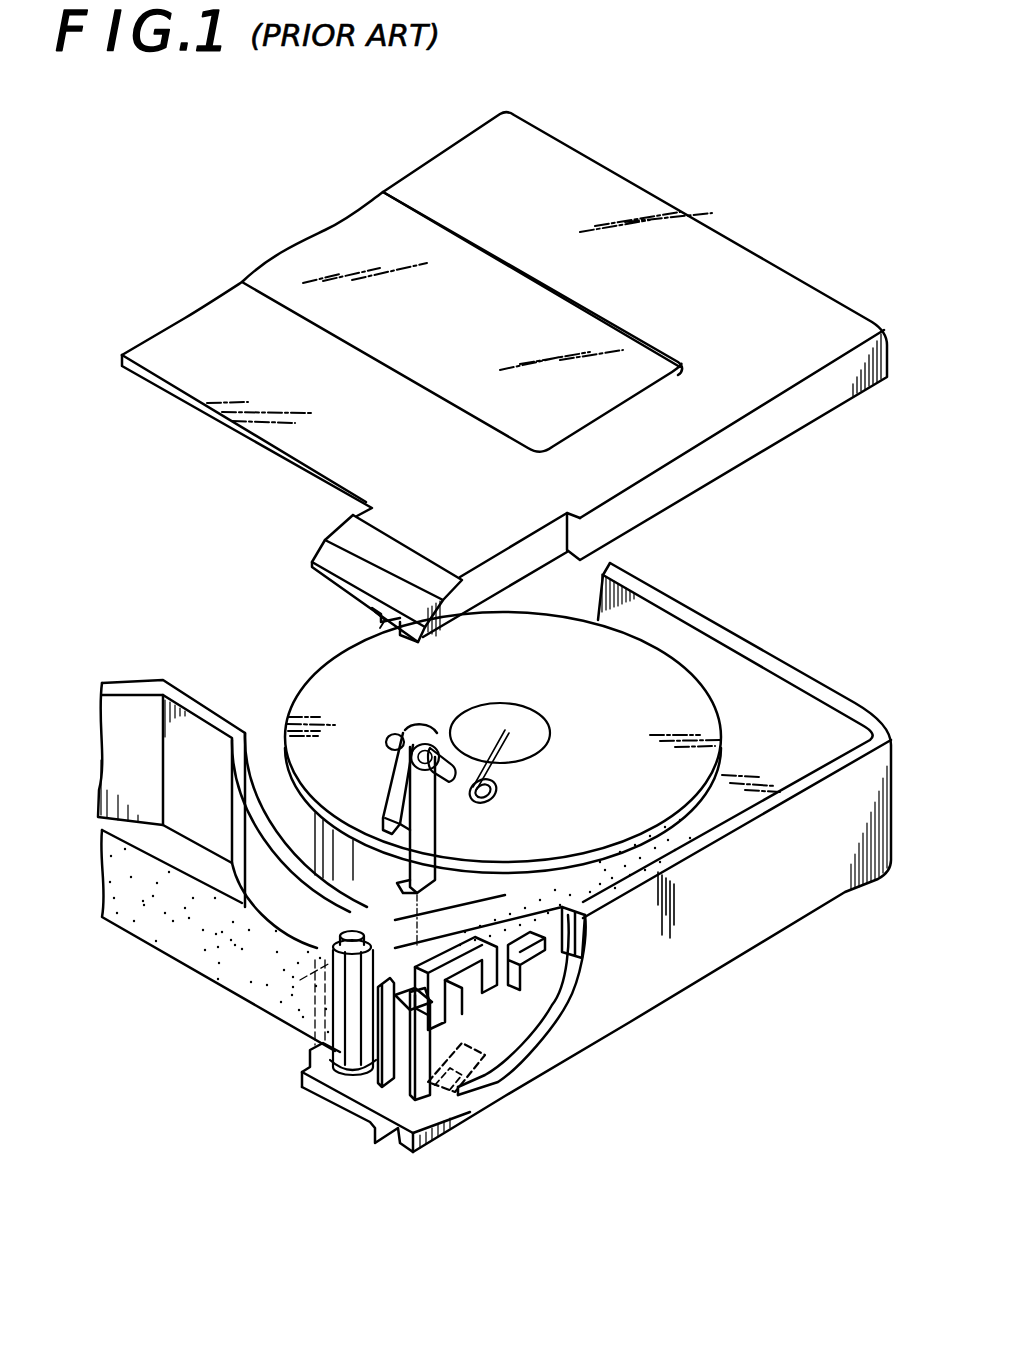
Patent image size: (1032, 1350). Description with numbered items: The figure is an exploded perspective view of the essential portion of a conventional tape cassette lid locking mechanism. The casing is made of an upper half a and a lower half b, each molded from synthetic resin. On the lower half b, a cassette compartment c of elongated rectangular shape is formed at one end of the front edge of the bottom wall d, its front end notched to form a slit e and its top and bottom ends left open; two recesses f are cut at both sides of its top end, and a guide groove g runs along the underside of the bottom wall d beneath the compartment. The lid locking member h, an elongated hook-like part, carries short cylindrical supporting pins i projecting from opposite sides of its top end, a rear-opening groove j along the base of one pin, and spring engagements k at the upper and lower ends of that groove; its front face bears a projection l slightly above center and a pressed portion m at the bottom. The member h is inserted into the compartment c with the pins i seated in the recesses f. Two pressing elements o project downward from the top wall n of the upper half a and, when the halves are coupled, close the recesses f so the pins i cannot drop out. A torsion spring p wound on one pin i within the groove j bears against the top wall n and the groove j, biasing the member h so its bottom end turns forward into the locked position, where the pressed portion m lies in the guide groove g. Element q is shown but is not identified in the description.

The upper half a is at (745, 252).
The lower half b is at (847, 693).
The cassette compartment c is at (475, 970).
The bottom wall d is at (730, 767).
The slit e is at (383, 1070).
The recesses f is at (397, 972).
The guide groove g is at (375, 1128).
The lid locking member h is at (393, 768).
The supporting pins i is at (398, 738).
The groove j is at (417, 733).
The spring engagements k is at (443, 740).
The projection l is at (387, 813).
The pressed portion m is at (345, 897).
The top wall n is at (347, 432).
The pressing elements o is at (382, 620).
The torsion spring p is at (498, 790).
The hidden slot q is at (458, 1085).